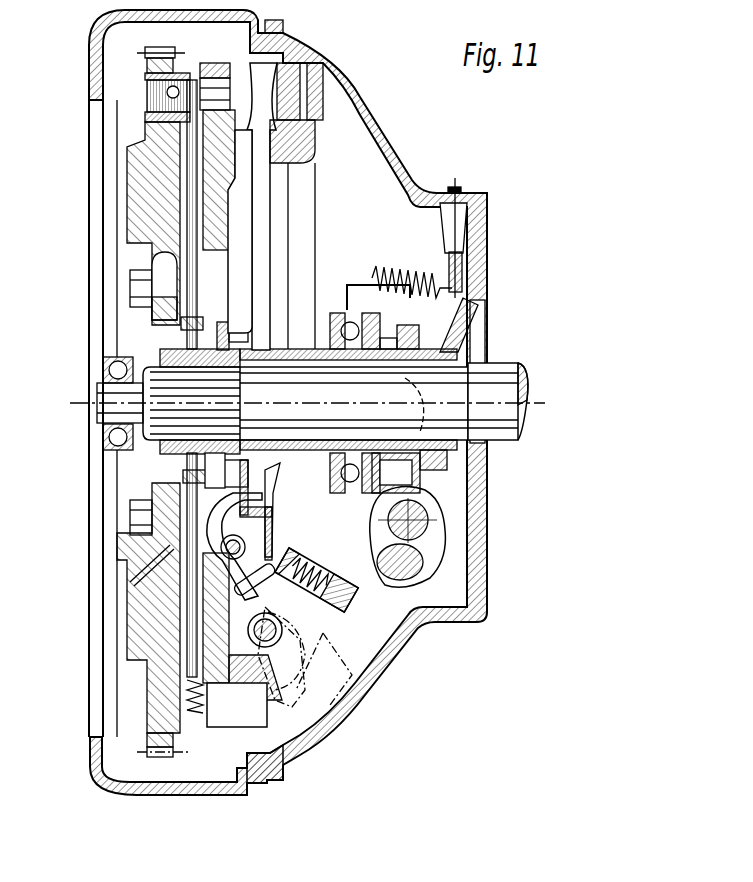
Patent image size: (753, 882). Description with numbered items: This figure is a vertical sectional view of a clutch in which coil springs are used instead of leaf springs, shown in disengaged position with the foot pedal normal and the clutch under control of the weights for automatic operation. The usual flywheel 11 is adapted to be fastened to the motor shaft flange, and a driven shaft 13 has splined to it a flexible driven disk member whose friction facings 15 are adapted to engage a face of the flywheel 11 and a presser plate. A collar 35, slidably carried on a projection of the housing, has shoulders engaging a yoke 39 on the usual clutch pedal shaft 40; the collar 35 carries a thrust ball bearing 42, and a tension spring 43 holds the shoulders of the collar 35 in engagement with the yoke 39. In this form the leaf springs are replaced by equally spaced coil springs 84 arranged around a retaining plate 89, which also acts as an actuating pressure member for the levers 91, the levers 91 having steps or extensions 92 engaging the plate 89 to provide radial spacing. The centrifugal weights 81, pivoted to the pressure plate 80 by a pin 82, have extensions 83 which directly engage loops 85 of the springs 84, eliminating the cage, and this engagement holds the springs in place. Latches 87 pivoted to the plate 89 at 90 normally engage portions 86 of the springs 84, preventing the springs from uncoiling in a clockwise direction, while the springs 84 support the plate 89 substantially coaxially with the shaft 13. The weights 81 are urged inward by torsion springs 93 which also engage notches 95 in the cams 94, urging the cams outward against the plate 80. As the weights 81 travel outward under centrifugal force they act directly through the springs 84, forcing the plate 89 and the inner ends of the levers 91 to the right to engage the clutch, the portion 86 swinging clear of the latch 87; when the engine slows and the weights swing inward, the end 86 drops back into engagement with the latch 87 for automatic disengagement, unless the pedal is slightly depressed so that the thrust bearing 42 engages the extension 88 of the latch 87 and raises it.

The flywheel 11 is at (150, 632).
The driven shaft 13 is at (480, 377).
The friction facings 15 is at (175, 592).
The collar 35 is at (422, 338).
The yoke 39 is at (428, 462).
The clutch pedal shaft 40 is at (428, 508).
The thrust ball bearing 42 is at (370, 322).
The tension spring 43 is at (420, 273).
The pressure plate 80 is at (237, 677).
The centrifugal weights 81 is at (345, 580).
The pin 82 is at (275, 668).
The extensions 83 is at (190, 625).
The coil springs 84 is at (272, 522).
The loops 85 is at (347, 585).
The spring portions 86 is at (270, 565).
The latches 87 is at (255, 538).
The extension 88 is at (270, 483).
The retaining plate 89 is at (165, 303).
The pivot 90 is at (123, 568).
The levers 91 is at (260, 197).
The steps or extensions 92 is at (242, 317).
The torsion springs 93 is at (318, 722).
The cams 94 is at (310, 642).
The notches 95 is at (307, 660).